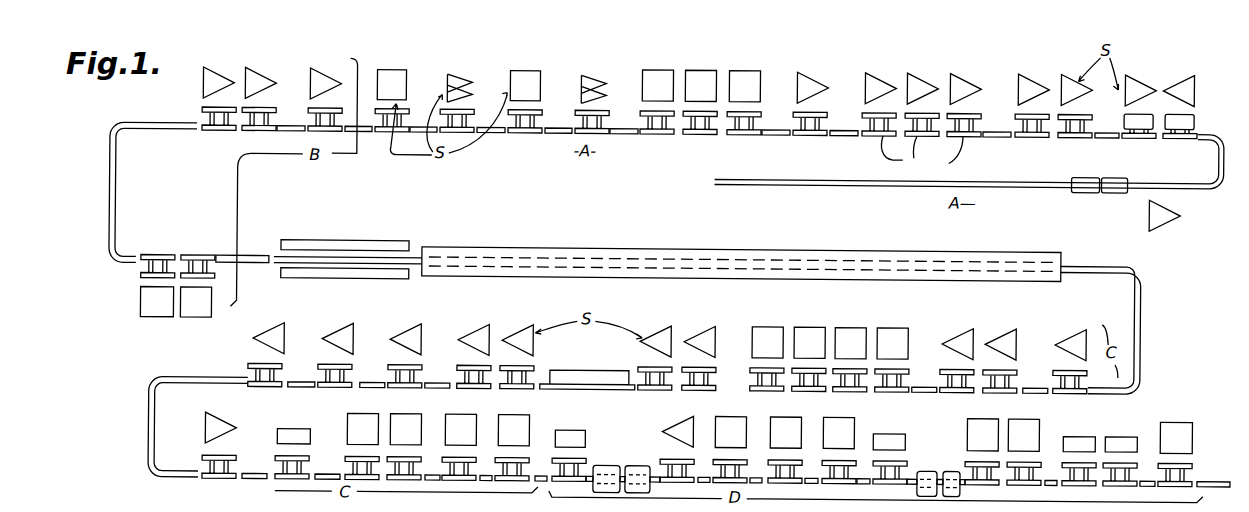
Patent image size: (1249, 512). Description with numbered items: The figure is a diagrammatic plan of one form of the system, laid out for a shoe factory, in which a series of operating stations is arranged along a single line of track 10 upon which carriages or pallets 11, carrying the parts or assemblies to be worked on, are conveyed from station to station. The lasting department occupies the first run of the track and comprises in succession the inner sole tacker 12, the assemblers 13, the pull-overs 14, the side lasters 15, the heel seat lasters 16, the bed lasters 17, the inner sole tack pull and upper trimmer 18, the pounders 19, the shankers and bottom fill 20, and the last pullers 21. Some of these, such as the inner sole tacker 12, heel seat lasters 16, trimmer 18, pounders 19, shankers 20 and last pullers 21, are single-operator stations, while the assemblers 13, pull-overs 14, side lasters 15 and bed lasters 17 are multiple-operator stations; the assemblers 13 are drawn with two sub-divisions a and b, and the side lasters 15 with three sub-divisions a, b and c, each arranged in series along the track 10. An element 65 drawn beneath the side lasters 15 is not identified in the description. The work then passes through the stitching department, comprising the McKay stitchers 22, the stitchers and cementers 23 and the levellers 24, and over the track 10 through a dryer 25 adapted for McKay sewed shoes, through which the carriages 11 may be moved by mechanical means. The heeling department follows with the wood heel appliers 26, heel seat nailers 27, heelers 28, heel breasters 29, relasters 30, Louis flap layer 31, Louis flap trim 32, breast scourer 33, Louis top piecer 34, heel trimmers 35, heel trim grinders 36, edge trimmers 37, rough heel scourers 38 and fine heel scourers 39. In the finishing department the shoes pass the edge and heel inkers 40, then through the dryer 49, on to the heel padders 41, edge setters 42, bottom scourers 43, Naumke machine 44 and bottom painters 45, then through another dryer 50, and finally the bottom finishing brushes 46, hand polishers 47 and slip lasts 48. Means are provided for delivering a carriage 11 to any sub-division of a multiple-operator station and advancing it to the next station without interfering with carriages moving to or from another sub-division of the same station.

The track 10 is at (171, 130).
The carriages or pallets 11 is at (1150, 106).
The inner sole tacker 12 is at (1167, 224).
The assemblers 13 is at (1125, 56).
The pull-overs 14 is at (1015, 56).
The side lasters 15 is at (862, 56).
The heel seat lasters 16 is at (811, 87).
The bed lasters 17 is at (645, 53).
The inner sole tack pull and upper trimmer 18 is at (592, 86).
The pounders 19 is at (525, 87).
The shankers and bottom fill 20 is at (457, 85).
The last pullers 21 is at (392, 86).
The McKay stitchers 22 is at (325, 86).
The stitchers and cementers 23 is at (203, 57).
The levellers 24 is at (143, 320).
The dryer 25 is at (667, 253).
The wood heel appliers 26 is at (1070, 348).
The heel seat nailers 27 is at (942, 316).
The heelers 28 is at (752, 316).
The heel breasters 29 is at (640, 312).
The relasters 30 is at (587, 368).
The Louis flap layer 31 is at (458, 310).
The Louis flap trim 32 is at (405, 342).
The breast scourer 33 is at (336, 340).
The Louis top piecer 34 is at (266, 339).
The heel trimmers 35 is at (219, 433).
The heel trim grinders 36 is at (293, 442).
The edge trimmers 37 is at (348, 408).
The rough heel scourers 38 is at (459, 434).
The fine heel scourers 39 is at (512, 435).
The edge and heel inkers 40 is at (569, 443).
The heel padders 41 is at (677, 438).
The edge setters 42 is at (730, 438).
The bottom scourers 43 is at (785, 439).
The Naumke machine 44 is at (839, 438).
The bottom painters 45 is at (890, 447).
The bottom finishing brushes 46 is at (967, 407).
The hand polishers 47 is at (1063, 422).
The slip lasts 48 is at (1175, 442).
The dryer 49 is at (623, 467).
The dryer 50 is at (936, 471).
The support pedestals 65 is at (922, 155).